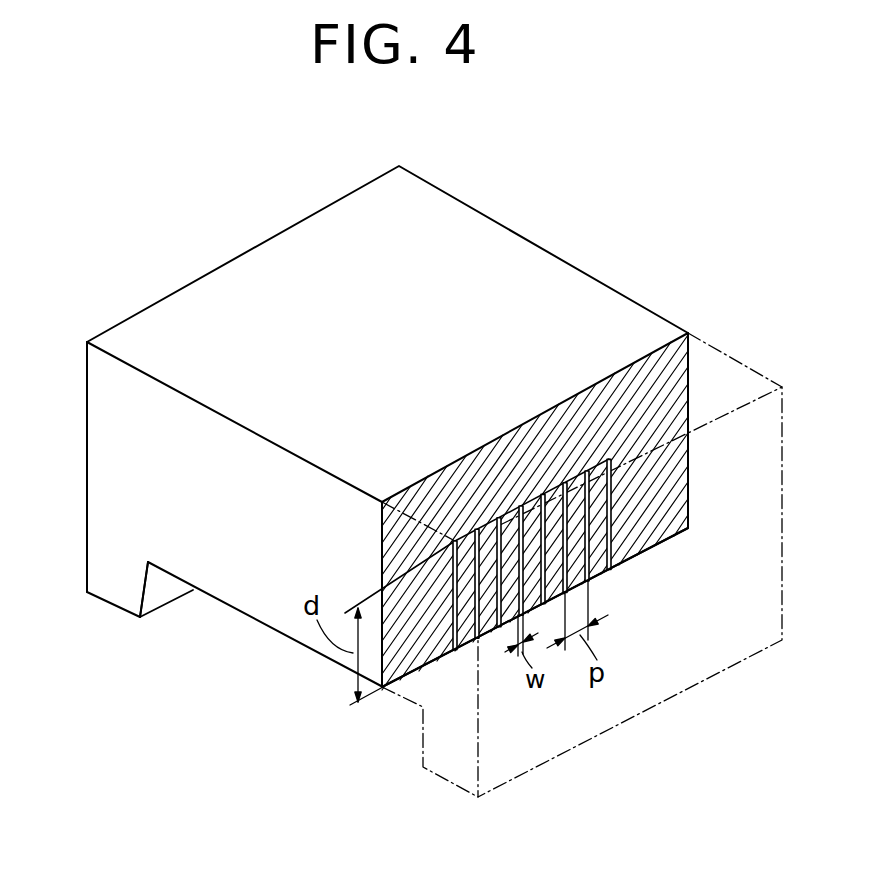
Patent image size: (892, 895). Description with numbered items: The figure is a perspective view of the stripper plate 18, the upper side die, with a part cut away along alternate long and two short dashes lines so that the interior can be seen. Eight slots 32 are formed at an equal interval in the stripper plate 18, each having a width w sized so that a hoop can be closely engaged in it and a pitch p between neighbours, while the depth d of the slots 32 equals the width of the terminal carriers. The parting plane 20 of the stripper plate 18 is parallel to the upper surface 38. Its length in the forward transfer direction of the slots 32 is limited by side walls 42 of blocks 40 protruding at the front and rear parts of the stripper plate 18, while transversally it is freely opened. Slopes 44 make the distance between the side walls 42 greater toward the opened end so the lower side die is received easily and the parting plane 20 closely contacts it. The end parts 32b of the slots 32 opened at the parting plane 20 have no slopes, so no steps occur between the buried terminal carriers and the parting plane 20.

The stripper plate 18 is at (656, 250).
The parting plane 20 is at (293, 643).
The slots 32 is at (607, 457).
The end parts of the slots 32b is at (457, 652).
The upper surface 38 is at (405, 244).
The blocks 40 is at (110, 605).
The side walls 42 is at (165, 578).
The slopes 44 is at (152, 597).